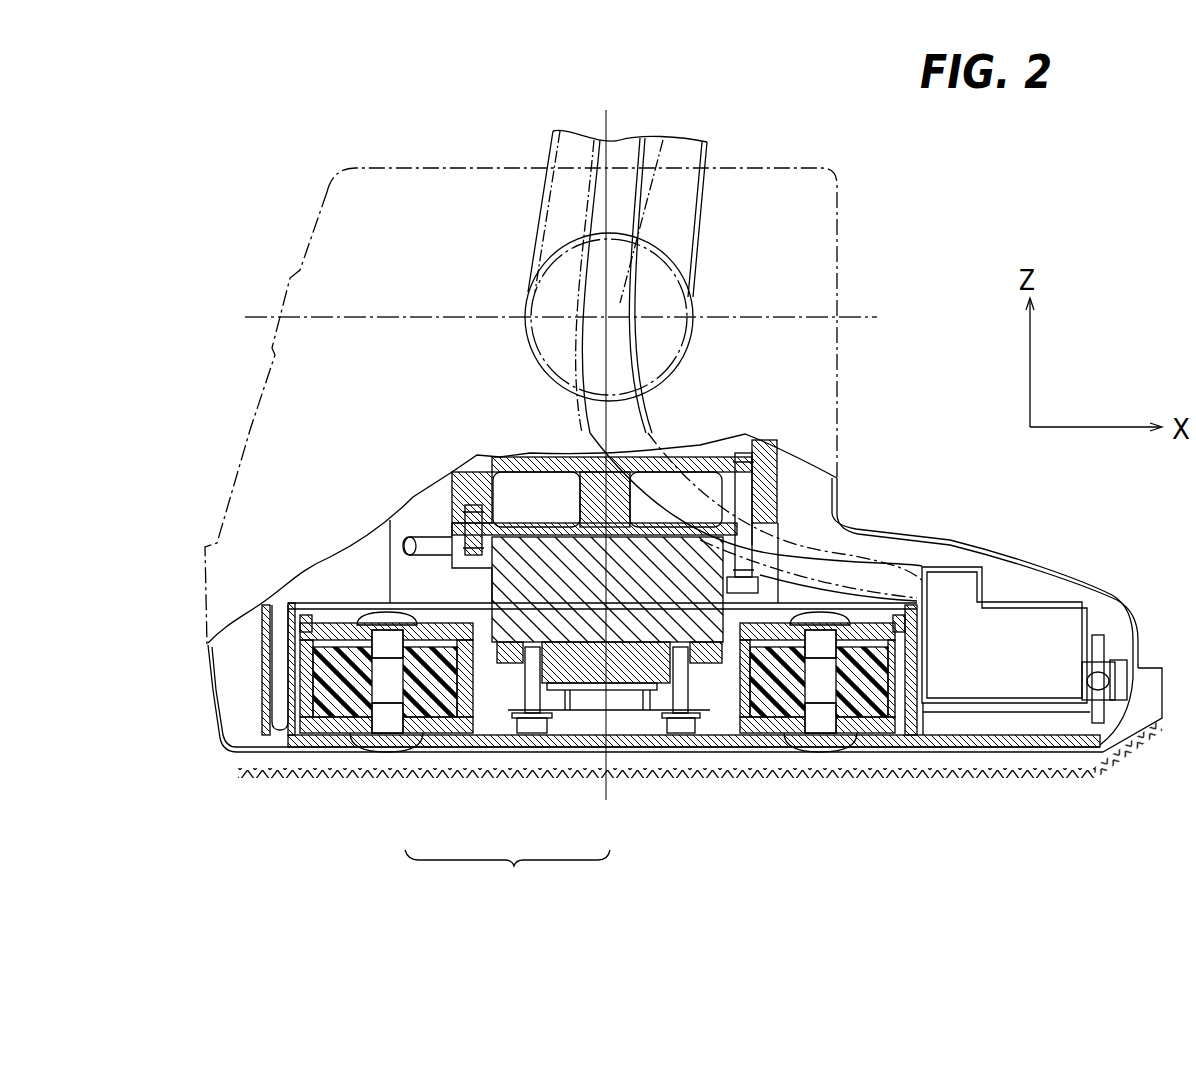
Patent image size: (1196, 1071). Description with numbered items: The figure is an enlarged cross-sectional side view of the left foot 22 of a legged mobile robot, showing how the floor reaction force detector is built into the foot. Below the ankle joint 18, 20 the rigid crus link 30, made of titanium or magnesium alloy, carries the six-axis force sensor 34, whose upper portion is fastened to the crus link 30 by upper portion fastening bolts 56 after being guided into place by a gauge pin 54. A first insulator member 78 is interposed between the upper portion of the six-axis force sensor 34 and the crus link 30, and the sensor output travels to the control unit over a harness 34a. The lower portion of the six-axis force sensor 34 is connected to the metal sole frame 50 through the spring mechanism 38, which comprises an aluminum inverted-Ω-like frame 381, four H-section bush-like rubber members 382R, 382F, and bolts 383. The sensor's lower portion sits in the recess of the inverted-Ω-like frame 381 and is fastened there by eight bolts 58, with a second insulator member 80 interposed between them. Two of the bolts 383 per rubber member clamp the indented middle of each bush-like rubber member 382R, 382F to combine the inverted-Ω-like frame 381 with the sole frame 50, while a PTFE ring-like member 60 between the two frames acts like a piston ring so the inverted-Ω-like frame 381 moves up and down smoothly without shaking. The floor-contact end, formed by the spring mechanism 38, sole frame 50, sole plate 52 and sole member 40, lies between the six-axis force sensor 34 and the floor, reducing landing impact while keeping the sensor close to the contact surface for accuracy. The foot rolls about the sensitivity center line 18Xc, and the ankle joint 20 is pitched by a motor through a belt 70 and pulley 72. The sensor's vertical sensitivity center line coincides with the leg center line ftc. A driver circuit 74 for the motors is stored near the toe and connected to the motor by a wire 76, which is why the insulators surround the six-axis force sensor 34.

The ankle joint 18 is at (591, 406).
The ankle joint 20 is at (716, 283).
The sensitivity center line Xc of the ankle joint 18Xc is at (842, 318).
The foot 22 is at (920, 480).
The crus link 30 is at (777, 505).
The six-axis force sensor 34 is at (633, 625).
The harness 34a is at (423, 540).
The spring mechanism 38 is at (507, 873).
The inverted-Ω-like frame 381 is at (563, 692).
The bush-like rubber member 382R is at (462, 754).
The bush-like rubber member 382F is at (880, 724).
The bolts 383 is at (392, 760).
The sole member 40 is at (980, 765).
The sole frame 50 is at (330, 748).
The sole plate 52 is at (285, 758).
The gauge pin 54 is at (463, 516).
The upper portion fastening bolts 56 is at (865, 553).
The bolts 58 is at (533, 757).
The ring-like member 60 is at (303, 622).
The belt 70 is at (703, 200).
The pulley 72 is at (662, 146).
The driver circuit 74 is at (1000, 666).
The wire 76 is at (948, 530).
The first insulator member 78 is at (527, 524).
The second insulator member 80 is at (548, 726).
The leg center line ftc is at (608, 795).